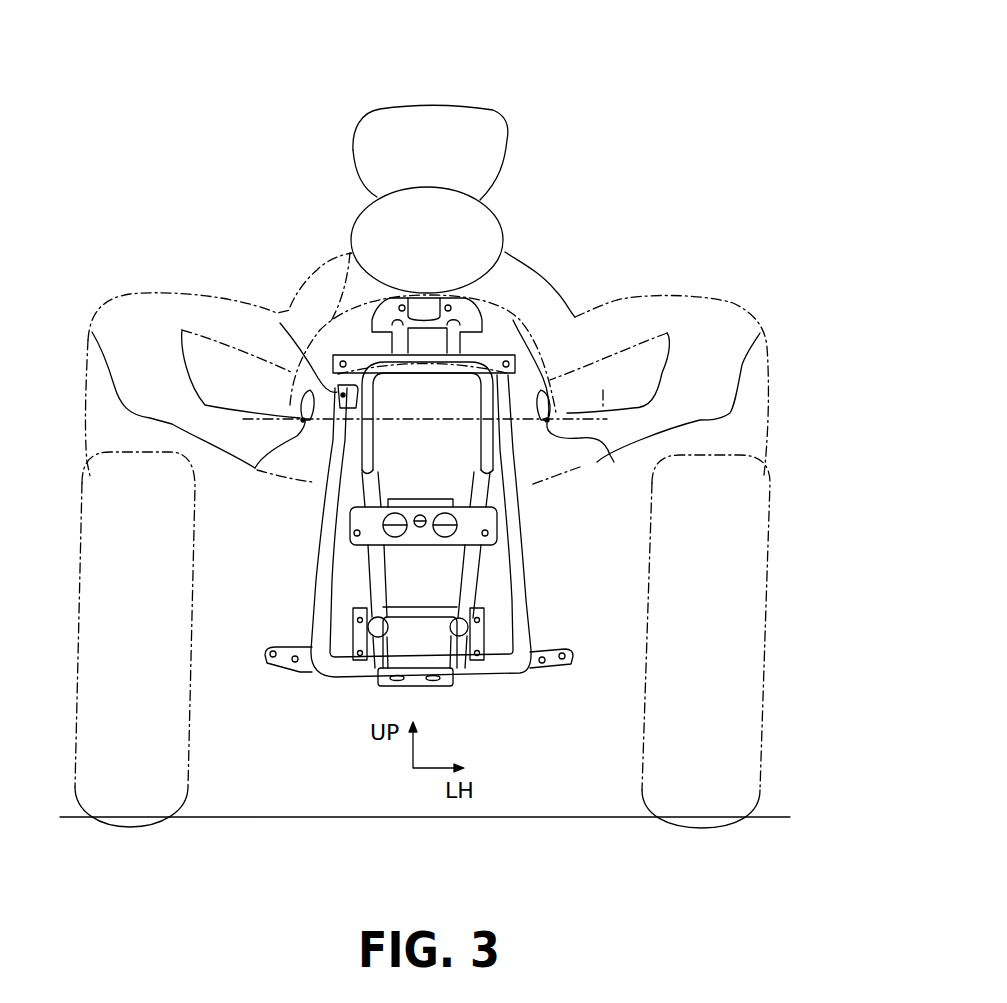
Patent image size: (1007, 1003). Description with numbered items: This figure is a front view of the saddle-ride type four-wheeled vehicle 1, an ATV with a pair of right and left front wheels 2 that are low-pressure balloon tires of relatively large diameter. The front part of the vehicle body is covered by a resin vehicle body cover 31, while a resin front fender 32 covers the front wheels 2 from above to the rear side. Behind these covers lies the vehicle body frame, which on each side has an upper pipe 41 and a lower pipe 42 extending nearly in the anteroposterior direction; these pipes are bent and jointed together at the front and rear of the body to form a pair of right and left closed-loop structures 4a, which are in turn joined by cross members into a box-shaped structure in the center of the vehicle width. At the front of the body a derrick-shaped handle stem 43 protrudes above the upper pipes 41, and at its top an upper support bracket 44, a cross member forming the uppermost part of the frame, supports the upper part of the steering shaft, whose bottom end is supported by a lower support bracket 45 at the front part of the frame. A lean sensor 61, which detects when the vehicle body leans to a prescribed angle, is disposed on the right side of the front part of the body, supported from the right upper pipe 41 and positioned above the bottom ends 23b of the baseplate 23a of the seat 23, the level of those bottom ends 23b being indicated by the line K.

The saddle-ride type four-wheeled vehicle 1 is at (578, 112).
The front wheels 2 is at (80, 507).
The closed-loop structures 4a is at (306, 554).
The seat 23 is at (428, 353).
The baseplate 23a is at (531, 425).
The bottom ends 23b is at (257, 469).
The vehicle body cover 31 is at (518, 198).
The front fender 32 is at (165, 290).
The upper pipe 41 is at (366, 592).
The lower pipe 42 is at (333, 677).
The handle stem 43 is at (360, 357).
The upper support bracket 44 is at (415, 298).
The lower support bracket 45 is at (427, 499).
The lean sensor 61 is at (322, 395).